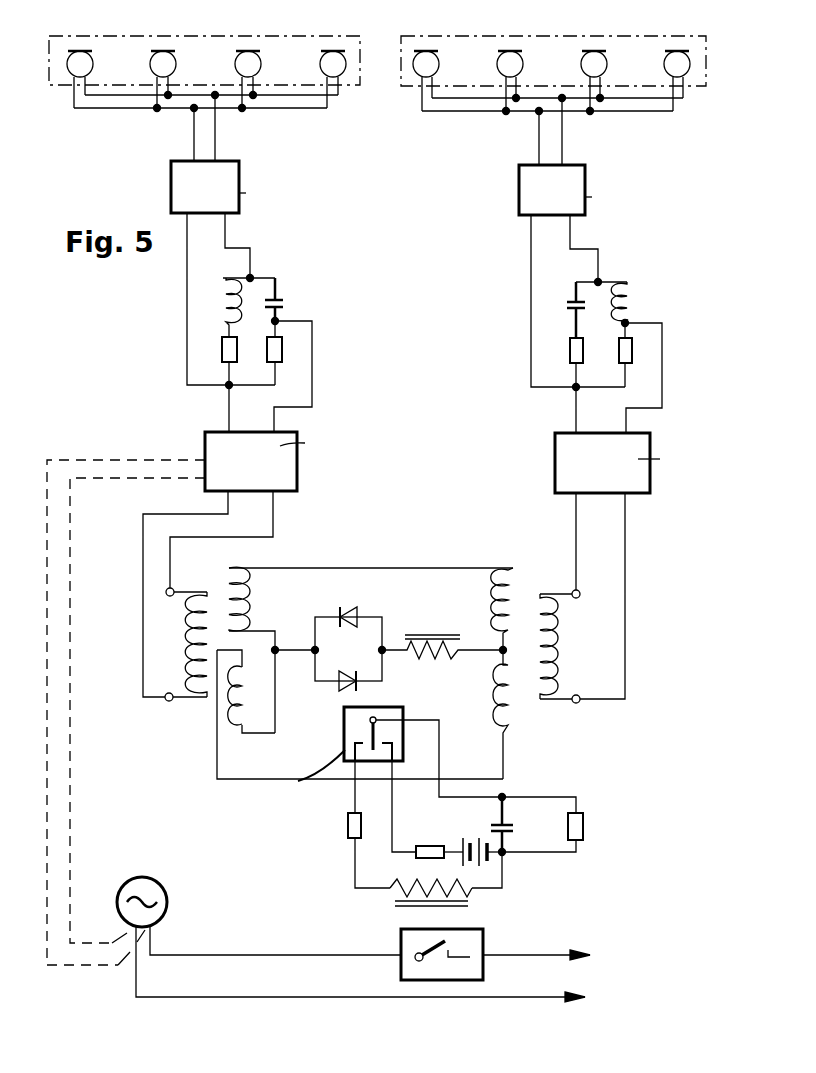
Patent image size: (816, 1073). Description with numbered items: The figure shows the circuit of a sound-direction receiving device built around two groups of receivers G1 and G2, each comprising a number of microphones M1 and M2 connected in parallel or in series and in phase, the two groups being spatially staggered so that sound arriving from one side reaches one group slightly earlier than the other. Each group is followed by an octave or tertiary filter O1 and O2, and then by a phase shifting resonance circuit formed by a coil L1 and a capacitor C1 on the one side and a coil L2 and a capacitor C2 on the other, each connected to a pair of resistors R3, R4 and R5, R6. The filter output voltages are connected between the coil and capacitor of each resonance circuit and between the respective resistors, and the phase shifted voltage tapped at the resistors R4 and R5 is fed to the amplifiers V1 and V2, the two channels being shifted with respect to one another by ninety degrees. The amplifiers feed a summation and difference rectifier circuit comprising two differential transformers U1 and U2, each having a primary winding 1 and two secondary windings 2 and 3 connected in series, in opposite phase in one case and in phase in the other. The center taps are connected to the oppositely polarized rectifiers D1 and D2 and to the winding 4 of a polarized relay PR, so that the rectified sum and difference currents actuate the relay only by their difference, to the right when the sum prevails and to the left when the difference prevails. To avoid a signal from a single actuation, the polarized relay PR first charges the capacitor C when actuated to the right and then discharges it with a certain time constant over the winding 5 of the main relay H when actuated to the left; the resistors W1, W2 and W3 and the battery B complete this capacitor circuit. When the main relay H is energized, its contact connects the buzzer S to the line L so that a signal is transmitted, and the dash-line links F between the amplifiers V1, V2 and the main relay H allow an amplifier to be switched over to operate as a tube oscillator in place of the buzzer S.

The microphones M1 is at (152, 58).
The group of receivers G1 is at (62, 72).
The octave filter O1 is at (190, 183).
The coil L1 is at (222, 290).
The capacitor C1 is at (278, 302).
The resistor R3 is at (228, 347).
The resistor R4 is at (270, 350).
The amplifier V1 is at (277, 465).
The links F is at (55, 715).
The differential transformer U1 is at (213, 607).
The primary winding 1 is at (192, 652).
The secondary winding 2 is at (248, 602).
The secondary winding 3 is at (246, 706).
The rectifier D1 is at (350, 610).
The rectifier D2 is at (340, 690).
The winding 4 is at (420, 660).
The microphones M2 is at (500, 58).
The group of receivers G2 is at (690, 78).
The octave filter O2 is at (538, 188).
The capacitor C2 is at (571, 300).
The coil L2 is at (634, 305).
The resistor R5 is at (571, 350).
The resistor R6 is at (622, 348).
The amplifier V2 is at (570, 471).
The differential transformer U2 is at (525, 618).
The polarized relay PR is at (345, 732).
The resistor W2 is at (348, 830).
The resistor W3 is at (585, 826).
The capacitor C is at (503, 832).
The resistor W1 is at (430, 846).
The battery B is at (480, 836).
The winding 5 is at (415, 876).
The buzzer S is at (148, 886).
The line L is at (580, 976).
The main relay H is at (418, 941).